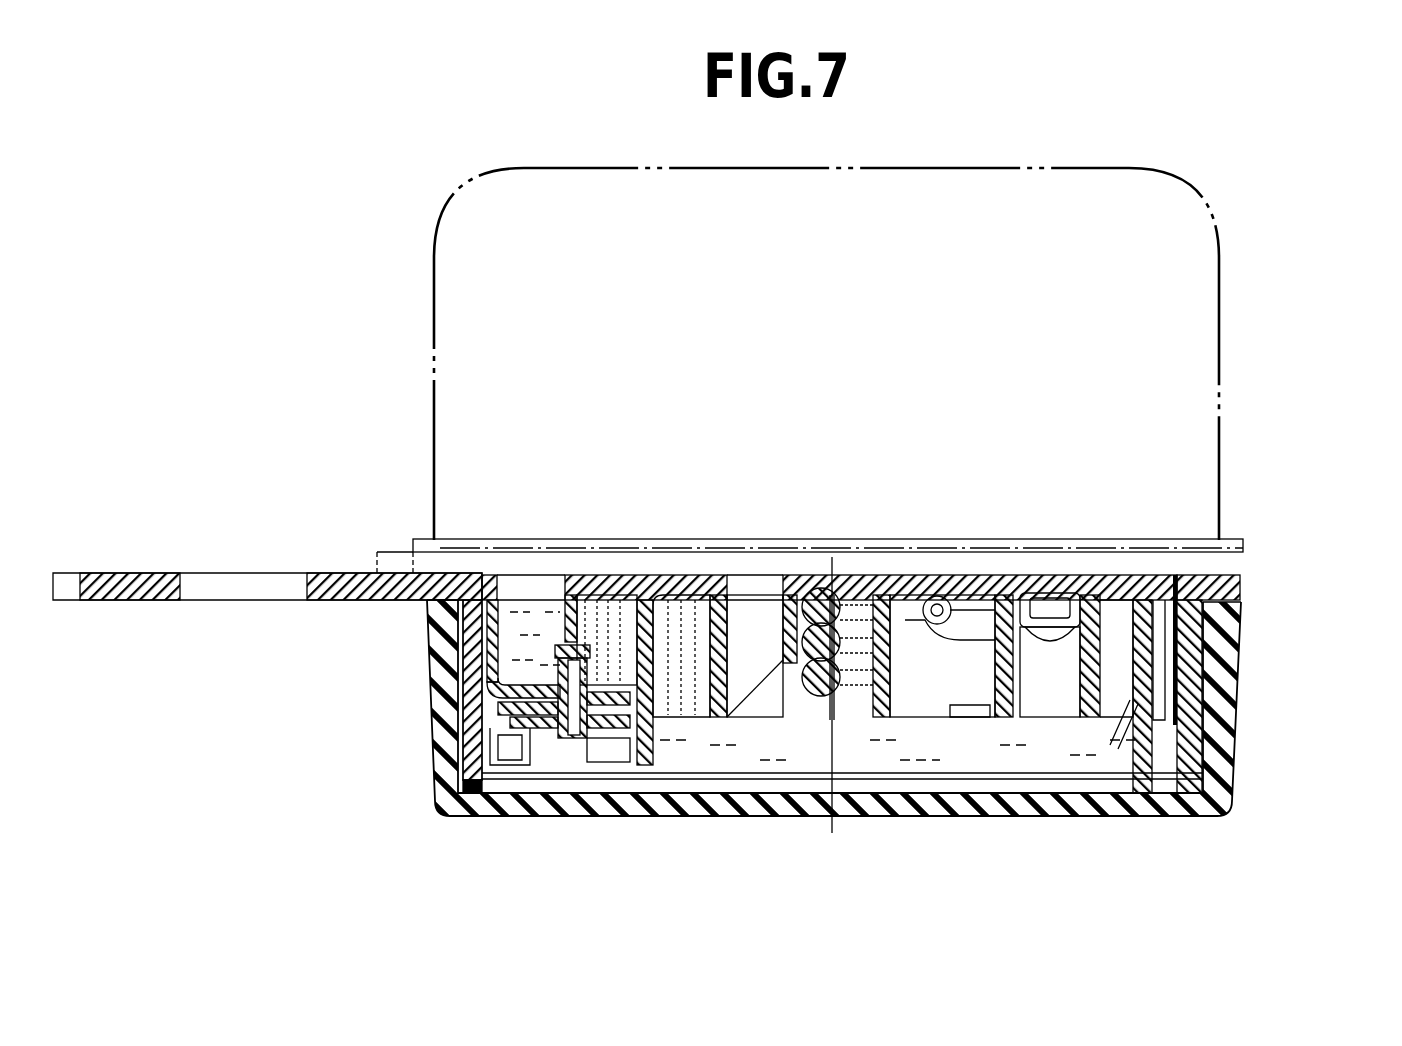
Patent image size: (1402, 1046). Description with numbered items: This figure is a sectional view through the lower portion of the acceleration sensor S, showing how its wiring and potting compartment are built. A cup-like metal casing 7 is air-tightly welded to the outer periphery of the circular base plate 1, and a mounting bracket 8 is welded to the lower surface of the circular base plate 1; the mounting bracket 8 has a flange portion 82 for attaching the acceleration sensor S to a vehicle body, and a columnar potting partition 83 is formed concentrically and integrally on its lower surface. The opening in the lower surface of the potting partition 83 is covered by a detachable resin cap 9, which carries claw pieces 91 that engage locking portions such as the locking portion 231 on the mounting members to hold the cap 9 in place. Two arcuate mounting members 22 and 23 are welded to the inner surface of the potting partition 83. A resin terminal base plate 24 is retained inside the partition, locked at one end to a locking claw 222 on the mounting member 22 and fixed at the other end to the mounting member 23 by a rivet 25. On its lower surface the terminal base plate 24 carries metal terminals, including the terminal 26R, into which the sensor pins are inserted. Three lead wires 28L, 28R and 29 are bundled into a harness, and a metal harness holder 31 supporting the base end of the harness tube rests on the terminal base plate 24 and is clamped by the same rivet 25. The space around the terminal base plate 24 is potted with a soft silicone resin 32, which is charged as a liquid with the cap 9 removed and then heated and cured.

The circular base plate 1 is at (432, 540).
The metal casing 7 is at (434, 262).
The acceleration sensor S is at (400, 366).
The mounting bracket 8 is at (681, 650).
The flange portion 82 is at (127, 578).
The potting partition 83 is at (1190, 663).
The cap 9 is at (1222, 743).
The claw piece 91 is at (1112, 592).
The mounting member 22 is at (506, 606).
The locking claw 222 is at (978, 718).
The mounting member 23 is at (1128, 702).
The locking portion 231 is at (1070, 632).
The terminal base plate 24 is at (893, 580).
The rivet 25 is at (557, 743).
The terminal 26R is at (1036, 592).
The lead wire 28R is at (852, 580).
The lead wire 28L is at (820, 693).
The lead wire 29 is at (808, 580).
The harness holder 31 is at (525, 766).
The silicone resin 32 is at (940, 755).